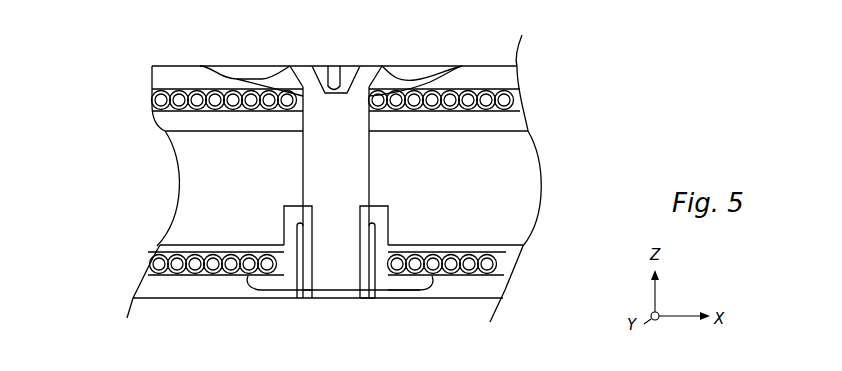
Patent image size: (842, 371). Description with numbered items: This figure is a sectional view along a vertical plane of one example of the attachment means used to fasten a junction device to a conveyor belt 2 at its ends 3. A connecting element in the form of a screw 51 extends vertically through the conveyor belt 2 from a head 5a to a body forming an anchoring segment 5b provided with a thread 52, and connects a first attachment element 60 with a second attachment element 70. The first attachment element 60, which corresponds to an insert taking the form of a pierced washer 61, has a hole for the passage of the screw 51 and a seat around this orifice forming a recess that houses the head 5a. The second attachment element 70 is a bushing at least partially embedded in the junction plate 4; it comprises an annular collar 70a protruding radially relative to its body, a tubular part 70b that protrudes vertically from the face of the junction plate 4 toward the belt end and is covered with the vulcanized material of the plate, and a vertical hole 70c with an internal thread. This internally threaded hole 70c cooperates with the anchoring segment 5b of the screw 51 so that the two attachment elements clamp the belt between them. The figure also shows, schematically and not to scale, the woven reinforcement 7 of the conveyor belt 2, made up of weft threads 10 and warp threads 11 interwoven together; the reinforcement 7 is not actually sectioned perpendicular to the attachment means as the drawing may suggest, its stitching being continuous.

The conveyor belt 2 is at (192, 158).
The ends of the conveyor belt 3 is at (346, 162).
The junction plate 4 is at (180, 66).
The head 5a is at (372, 65).
The anchoring segment 5b is at (336, 192).
The woven reinforcement 7 is at (483, 88).
The weft threads 10 is at (192, 113).
The warp threads 11 is at (157, 97).
The screw 51 is at (371, 188).
The thread 52 is at (386, 206).
The first attachment element 60 is at (237, 65).
The pierced washer 61 is at (257, 76).
The second attachment element 70 is at (281, 299).
The annular collar 70a is at (405, 299).
The tubular part 70b is at (370, 299).
The vertical hole 70c is at (312, 291).